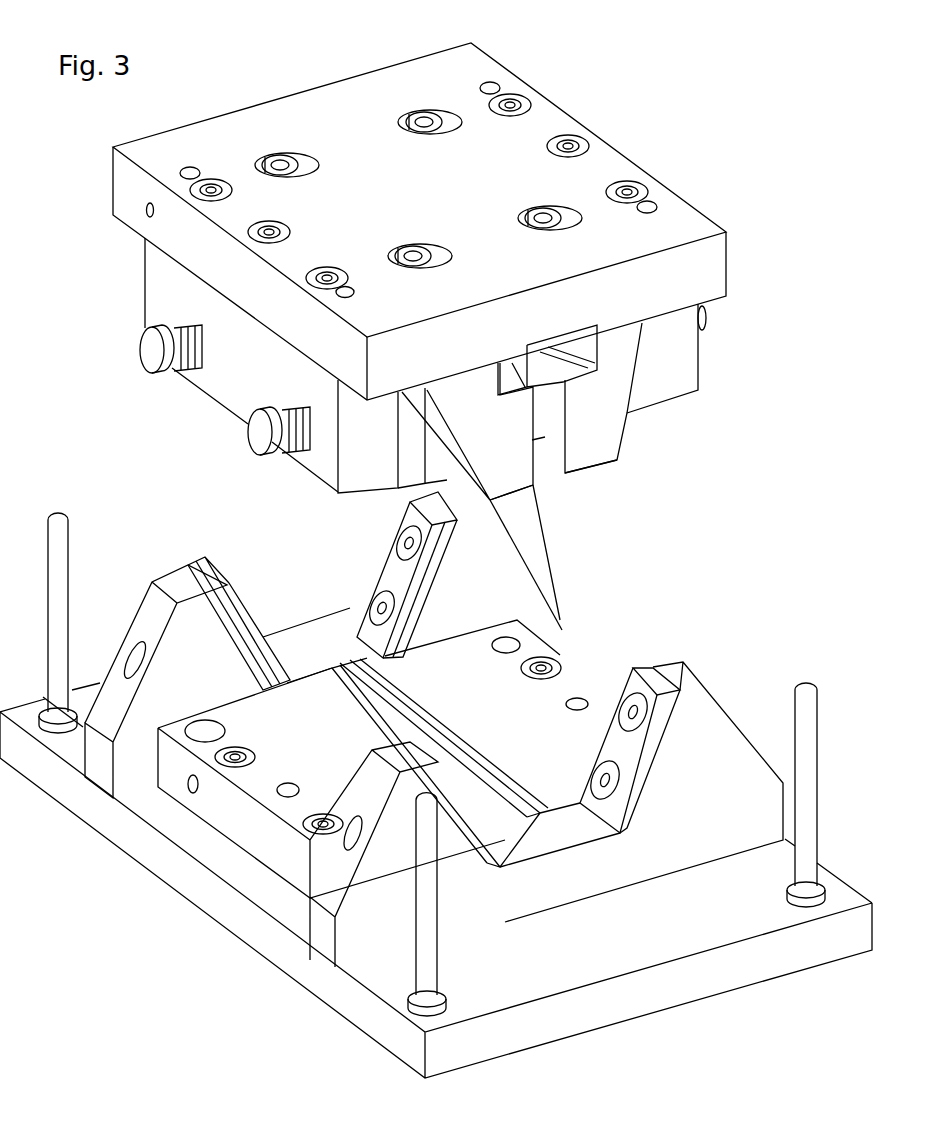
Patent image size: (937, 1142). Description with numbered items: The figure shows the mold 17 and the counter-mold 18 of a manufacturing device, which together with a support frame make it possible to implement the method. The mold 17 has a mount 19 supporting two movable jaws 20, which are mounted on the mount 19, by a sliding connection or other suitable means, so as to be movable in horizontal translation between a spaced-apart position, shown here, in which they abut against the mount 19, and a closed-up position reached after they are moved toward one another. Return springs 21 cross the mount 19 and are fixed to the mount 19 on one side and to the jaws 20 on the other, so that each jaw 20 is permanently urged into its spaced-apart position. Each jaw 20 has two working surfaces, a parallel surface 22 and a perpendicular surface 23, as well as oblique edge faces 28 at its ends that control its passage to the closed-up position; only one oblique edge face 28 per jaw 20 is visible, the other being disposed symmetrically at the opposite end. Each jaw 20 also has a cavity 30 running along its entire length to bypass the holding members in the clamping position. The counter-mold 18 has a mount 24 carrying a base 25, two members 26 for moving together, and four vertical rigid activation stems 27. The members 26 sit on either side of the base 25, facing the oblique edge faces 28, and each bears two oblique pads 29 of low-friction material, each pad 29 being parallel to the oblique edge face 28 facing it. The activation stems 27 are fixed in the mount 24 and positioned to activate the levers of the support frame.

The mold 17 is at (643, 148).
The counter-mold 18 is at (197, 933).
The mount 19 is at (480, 68).
The movable jaws 20 is at (583, 452).
The return springs 21 is at (182, 376).
The parallel surface 22 is at (538, 447).
The perpendicular surface 23 is at (515, 480).
The mount 24 is at (640, 997).
The base 25 is at (575, 683).
The members for moving together 26 is at (142, 622).
The activation stems 27 is at (50, 590).
The oblique edge faces 28 is at (425, 395).
The oblique pads 29 is at (390, 578).
The cavity 30 is at (517, 352).